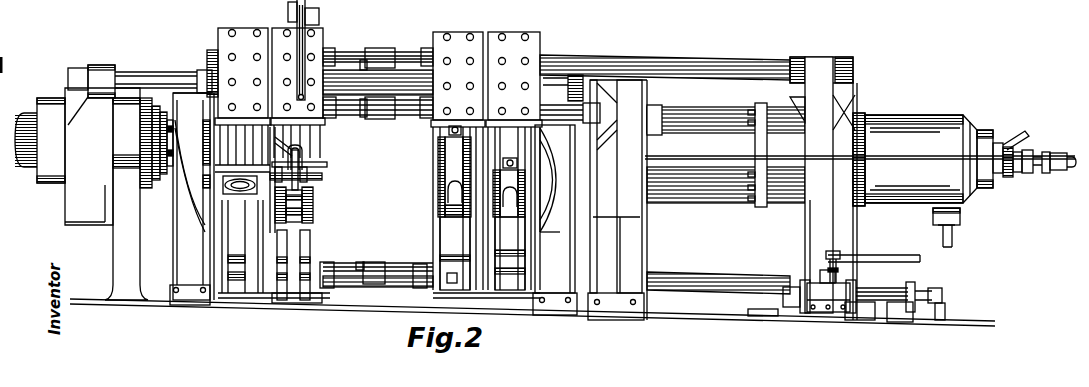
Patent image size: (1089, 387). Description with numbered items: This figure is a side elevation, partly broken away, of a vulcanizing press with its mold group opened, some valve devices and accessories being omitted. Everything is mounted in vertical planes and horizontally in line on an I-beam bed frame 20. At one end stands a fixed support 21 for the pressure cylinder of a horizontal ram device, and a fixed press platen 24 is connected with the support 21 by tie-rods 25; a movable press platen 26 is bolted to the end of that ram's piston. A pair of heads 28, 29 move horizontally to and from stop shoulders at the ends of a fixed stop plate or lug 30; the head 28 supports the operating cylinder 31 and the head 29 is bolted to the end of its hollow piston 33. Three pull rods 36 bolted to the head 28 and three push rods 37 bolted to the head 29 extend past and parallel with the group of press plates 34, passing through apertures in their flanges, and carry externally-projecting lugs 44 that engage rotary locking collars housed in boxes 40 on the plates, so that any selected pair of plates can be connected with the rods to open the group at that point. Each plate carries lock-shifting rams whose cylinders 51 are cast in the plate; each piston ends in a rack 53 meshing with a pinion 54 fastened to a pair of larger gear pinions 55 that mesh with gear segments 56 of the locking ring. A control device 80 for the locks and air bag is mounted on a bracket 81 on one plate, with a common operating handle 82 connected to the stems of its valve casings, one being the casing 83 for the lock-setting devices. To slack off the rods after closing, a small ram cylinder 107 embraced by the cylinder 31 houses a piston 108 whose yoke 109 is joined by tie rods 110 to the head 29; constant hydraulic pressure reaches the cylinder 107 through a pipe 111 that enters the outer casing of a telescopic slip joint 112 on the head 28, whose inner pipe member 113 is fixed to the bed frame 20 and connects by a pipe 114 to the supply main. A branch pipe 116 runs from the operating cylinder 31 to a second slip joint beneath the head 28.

The I-beam bed frame 20 is at (687, 317).
The fixed support 21 is at (93, 282).
The fixed press platen 24 is at (566, 263).
The tie-rods 25 is at (165, 72).
The movable press platen 26 is at (180, 247).
The head 28 is at (838, 128).
The head 29 is at (628, 82).
The fixed stop plate or lug 30 is at (758, 316).
The operating cylinder 31 is at (908, 116).
The piston 33 is at (713, 181).
The press plates 34 is at (433, 34).
The pull rods 36 is at (407, 62).
The push rods 37 is at (346, 53).
The boxes 40 is at (508, 27).
The externally-projecting lugs 44 is at (382, 50).
The ram cylinder 51 is at (292, 22).
The rack 53 is at (512, 233).
The pinion 54 is at (307, 203).
The gear pinions 55 is at (310, 193).
The gear segments 56 is at (440, 160).
The control device 80 is at (272, 142).
The bracket 81 is at (310, 177).
The operating handle 82 is at (277, 137).
The valve casing 83 is at (313, 28).
The cylinder 107 is at (1014, 180).
The ram or piston 108 is at (1034, 156).
The yoke 109 is at (1052, 173).
The tie rods 110 is at (912, 158).
The pipe 111 is at (1012, 132).
The telescopic slip joint 112 is at (836, 300).
The pipe member 113 is at (885, 293).
The pipe 114 is at (944, 309).
The branch pipe 116 is at (952, 241).